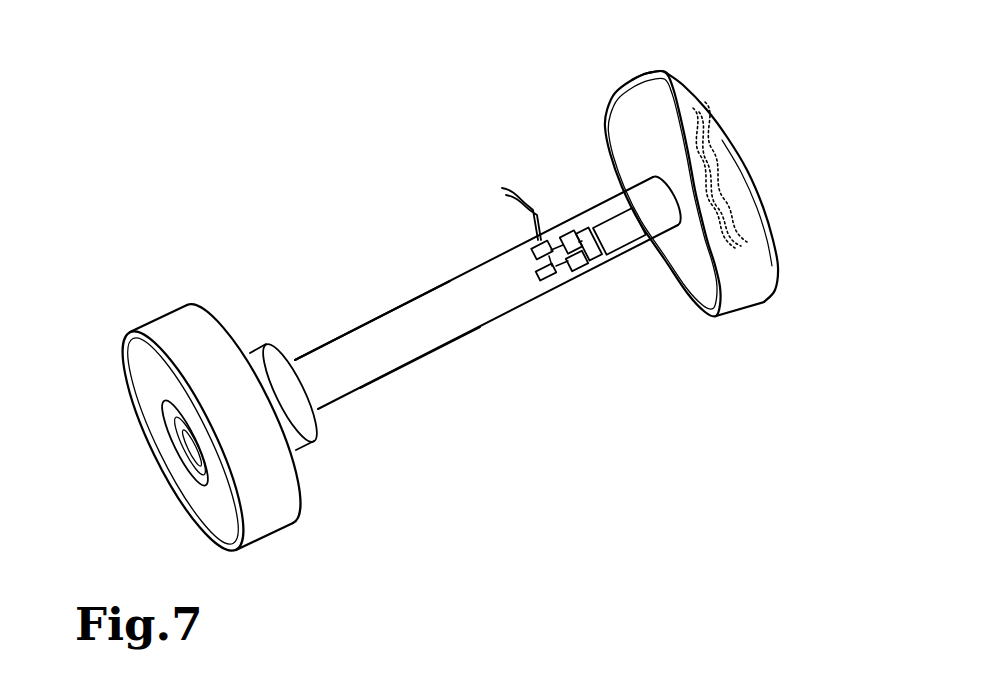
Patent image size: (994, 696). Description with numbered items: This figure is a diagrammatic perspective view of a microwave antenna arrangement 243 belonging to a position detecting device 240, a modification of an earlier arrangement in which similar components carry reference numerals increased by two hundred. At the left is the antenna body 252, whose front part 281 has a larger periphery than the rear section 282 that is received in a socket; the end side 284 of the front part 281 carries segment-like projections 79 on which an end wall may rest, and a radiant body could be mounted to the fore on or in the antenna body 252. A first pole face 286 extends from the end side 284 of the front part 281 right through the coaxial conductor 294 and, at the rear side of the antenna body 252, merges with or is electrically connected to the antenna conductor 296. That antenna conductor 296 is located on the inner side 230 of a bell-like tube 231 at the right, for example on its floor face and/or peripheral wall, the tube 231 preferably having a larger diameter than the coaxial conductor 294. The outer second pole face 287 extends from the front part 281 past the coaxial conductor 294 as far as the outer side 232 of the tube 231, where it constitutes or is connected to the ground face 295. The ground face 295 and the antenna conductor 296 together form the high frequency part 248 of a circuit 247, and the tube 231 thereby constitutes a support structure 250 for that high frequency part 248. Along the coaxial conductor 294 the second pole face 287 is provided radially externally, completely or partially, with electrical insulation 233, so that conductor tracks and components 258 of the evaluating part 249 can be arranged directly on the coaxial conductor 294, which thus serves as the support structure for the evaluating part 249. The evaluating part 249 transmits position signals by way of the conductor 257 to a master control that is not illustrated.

The position detecting device 240 is at (183, 231).
The segment-like projections 79 is at (124, 352).
The front part 281 is at (270, 520).
The rear section 282 is at (290, 432).
The end side 284 is at (177, 487).
The first pole face 286 is at (150, 443).
The antenna body 252 is at (320, 340).
The microwave antenna arrangement 243 is at (393, 304).
The electrical insulation 233 is at (497, 322).
The coaxial conductor 294 is at (400, 340).
The circuit 247 is at (538, 128).
The evaluating part 249 is at (596, 177).
The conductor tracks and components 258 is at (563, 198).
The conductor 257 is at (505, 222).
The bell-like tube 231 is at (700, 84).
The high frequency part 248 is at (656, 80).
The outer second pole face 287 is at (690, 268).
The ground face 295 is at (700, 300).
The inner side 230 is at (750, 210).
The support structure 250 is at (770, 262).
The outer side 232 is at (750, 300).
The antenna conductor 296 is at (715, 105).